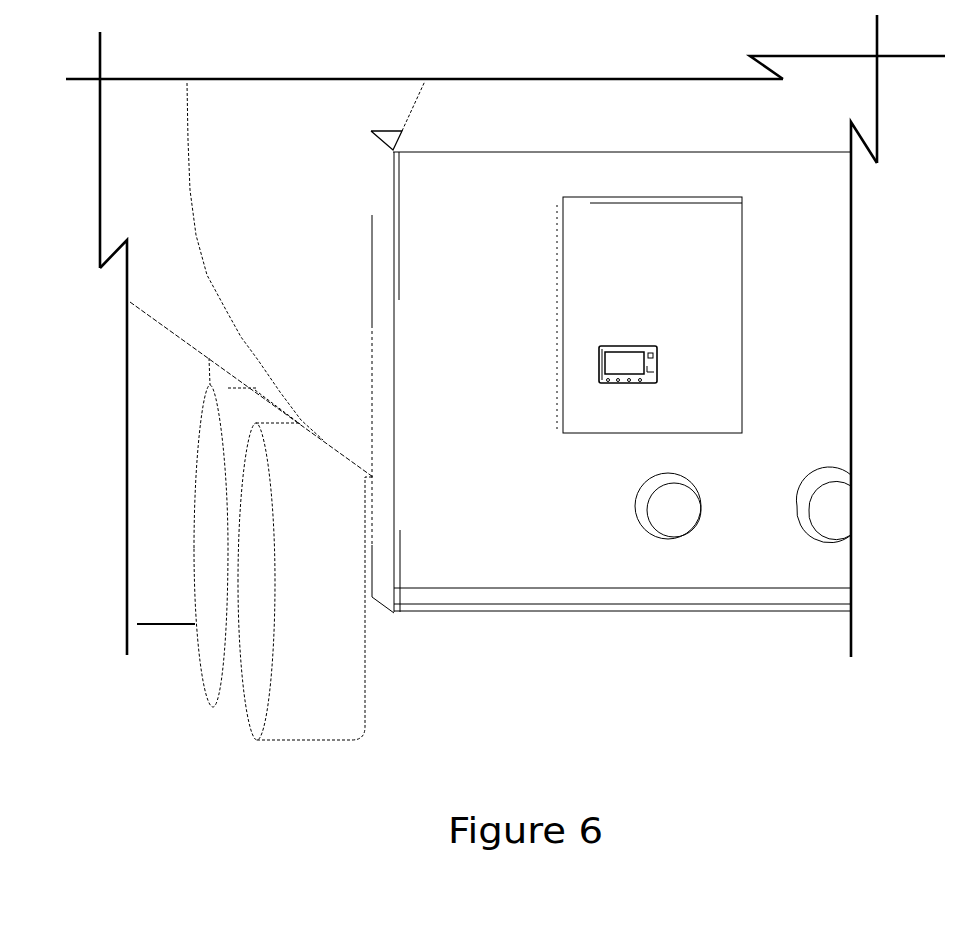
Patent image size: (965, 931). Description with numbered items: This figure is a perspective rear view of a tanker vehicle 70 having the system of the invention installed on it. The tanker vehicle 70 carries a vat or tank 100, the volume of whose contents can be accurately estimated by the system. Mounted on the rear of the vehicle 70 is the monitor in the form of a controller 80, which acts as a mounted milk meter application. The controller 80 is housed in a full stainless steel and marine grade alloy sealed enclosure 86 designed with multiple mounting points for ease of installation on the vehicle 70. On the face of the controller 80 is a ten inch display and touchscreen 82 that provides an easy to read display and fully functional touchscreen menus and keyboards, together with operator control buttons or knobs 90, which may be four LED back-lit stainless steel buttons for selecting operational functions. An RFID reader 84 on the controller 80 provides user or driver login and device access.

The tank 100 is at (282, 190).
The tanker vehicle 70 is at (170, 352).
The controller 80 is at (596, 372).
The touch display screen 82 is at (626, 362).
The RFID reader 84 is at (655, 369).
The sealed enclosure 86 is at (645, 345).
The operator control buttons 90 is at (620, 395).